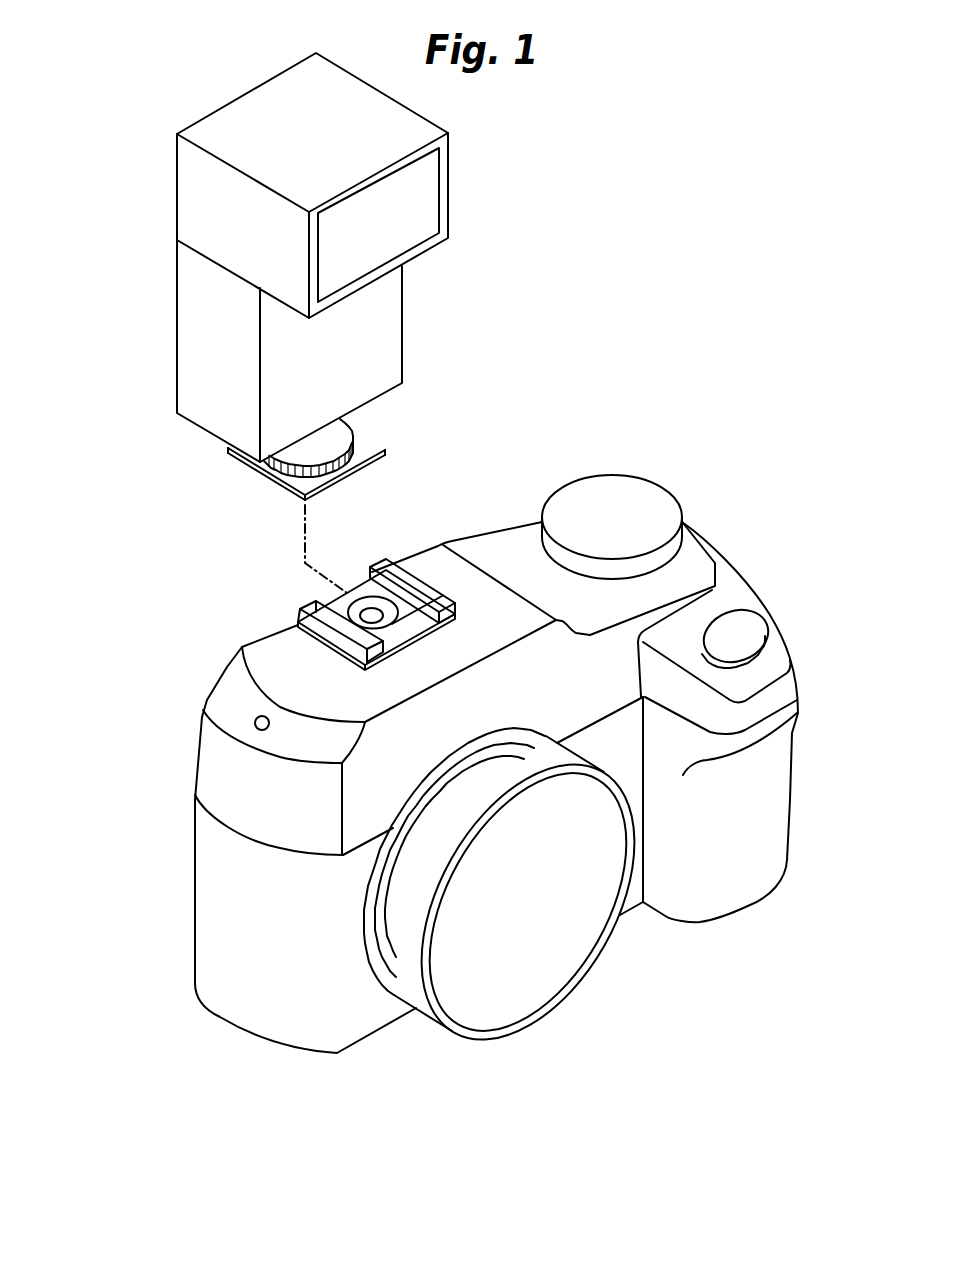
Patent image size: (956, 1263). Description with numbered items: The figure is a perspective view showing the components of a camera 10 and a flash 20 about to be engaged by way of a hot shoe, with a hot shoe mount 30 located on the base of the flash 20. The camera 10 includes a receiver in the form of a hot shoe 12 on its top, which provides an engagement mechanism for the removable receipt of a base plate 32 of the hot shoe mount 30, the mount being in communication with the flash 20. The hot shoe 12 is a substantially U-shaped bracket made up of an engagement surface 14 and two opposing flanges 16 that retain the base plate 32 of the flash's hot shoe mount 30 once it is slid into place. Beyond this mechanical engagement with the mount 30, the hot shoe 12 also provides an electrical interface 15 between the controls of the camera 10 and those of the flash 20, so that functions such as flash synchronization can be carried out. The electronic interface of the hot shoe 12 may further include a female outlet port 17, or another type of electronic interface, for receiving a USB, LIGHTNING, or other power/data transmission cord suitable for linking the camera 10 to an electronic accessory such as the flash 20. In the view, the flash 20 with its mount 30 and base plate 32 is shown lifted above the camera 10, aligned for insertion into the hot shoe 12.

The camera 10 is at (748, 540).
The hot shoe 12 is at (306, 600).
The engagement surface 14 is at (408, 618).
The electrical interface 15 is at (368, 610).
The opposing flanges 16 is at (385, 568).
The female outlet port 17 is at (370, 615).
The flash 20 is at (146, 237).
The hot shoe mount 30 is at (365, 420).
The base plate 32 is at (270, 483).